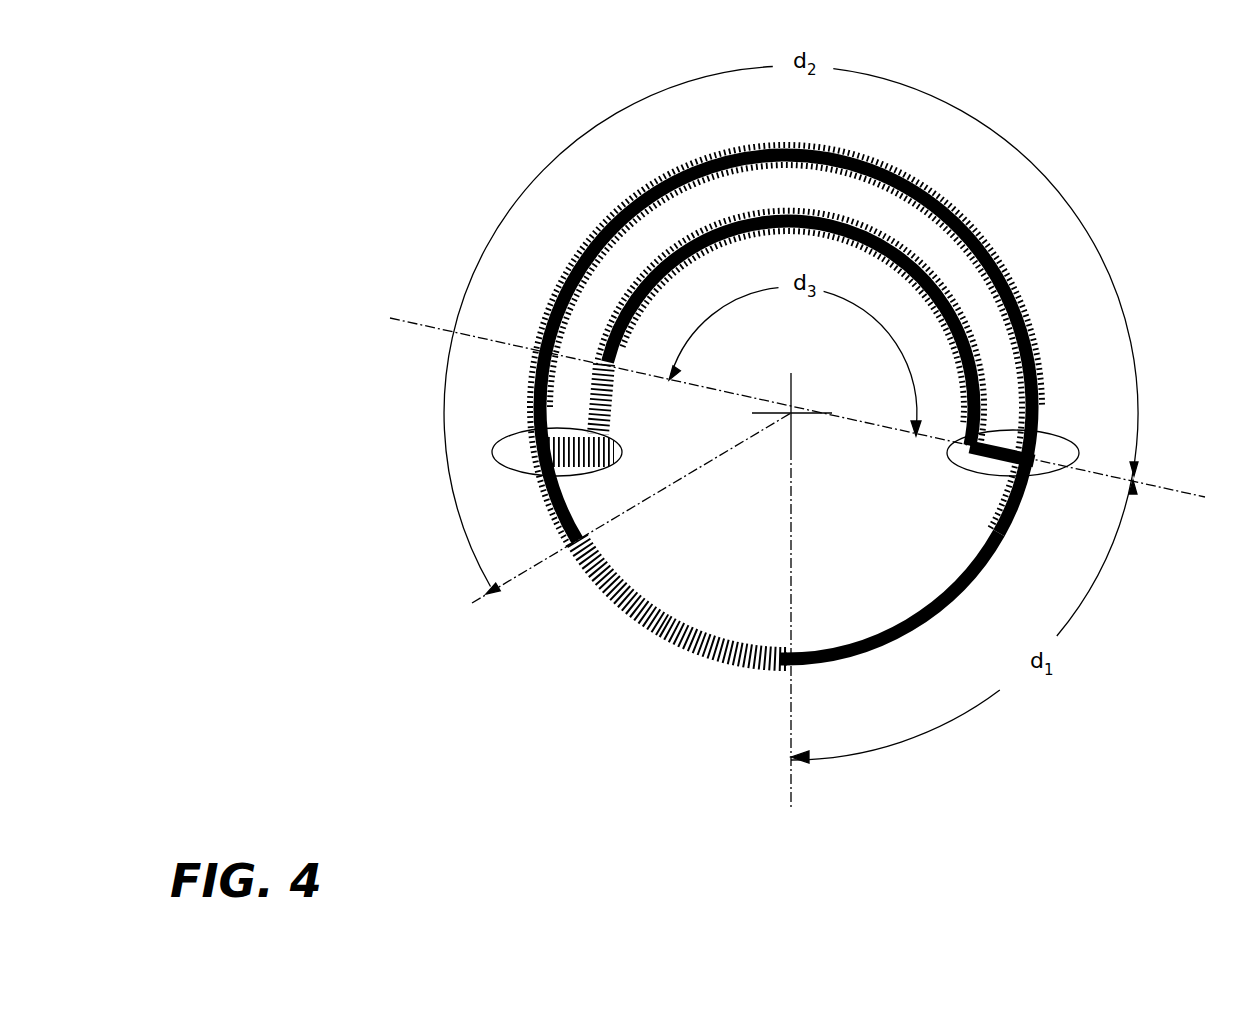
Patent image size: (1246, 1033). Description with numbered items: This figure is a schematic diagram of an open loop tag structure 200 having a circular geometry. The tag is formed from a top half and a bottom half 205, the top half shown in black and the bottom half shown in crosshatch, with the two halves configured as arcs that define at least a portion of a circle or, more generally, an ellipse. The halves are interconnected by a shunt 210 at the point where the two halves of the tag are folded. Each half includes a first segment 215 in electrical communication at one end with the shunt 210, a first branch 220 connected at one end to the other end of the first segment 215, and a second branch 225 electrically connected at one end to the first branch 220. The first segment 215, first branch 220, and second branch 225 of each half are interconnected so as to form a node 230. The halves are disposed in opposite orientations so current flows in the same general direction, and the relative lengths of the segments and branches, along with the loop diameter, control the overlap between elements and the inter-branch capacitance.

The open loop tag structure 200 is at (352, 588).
The top half and bottom half 205 is at (1022, 565).
The shunt 210 is at (794, 653).
The first segment 215 is at (922, 644).
The first top branch and first bottom branch 220 is at (531, 319).
The second top branch and second bottom branch 225 is at (968, 416).
The node 230 is at (1080, 453).